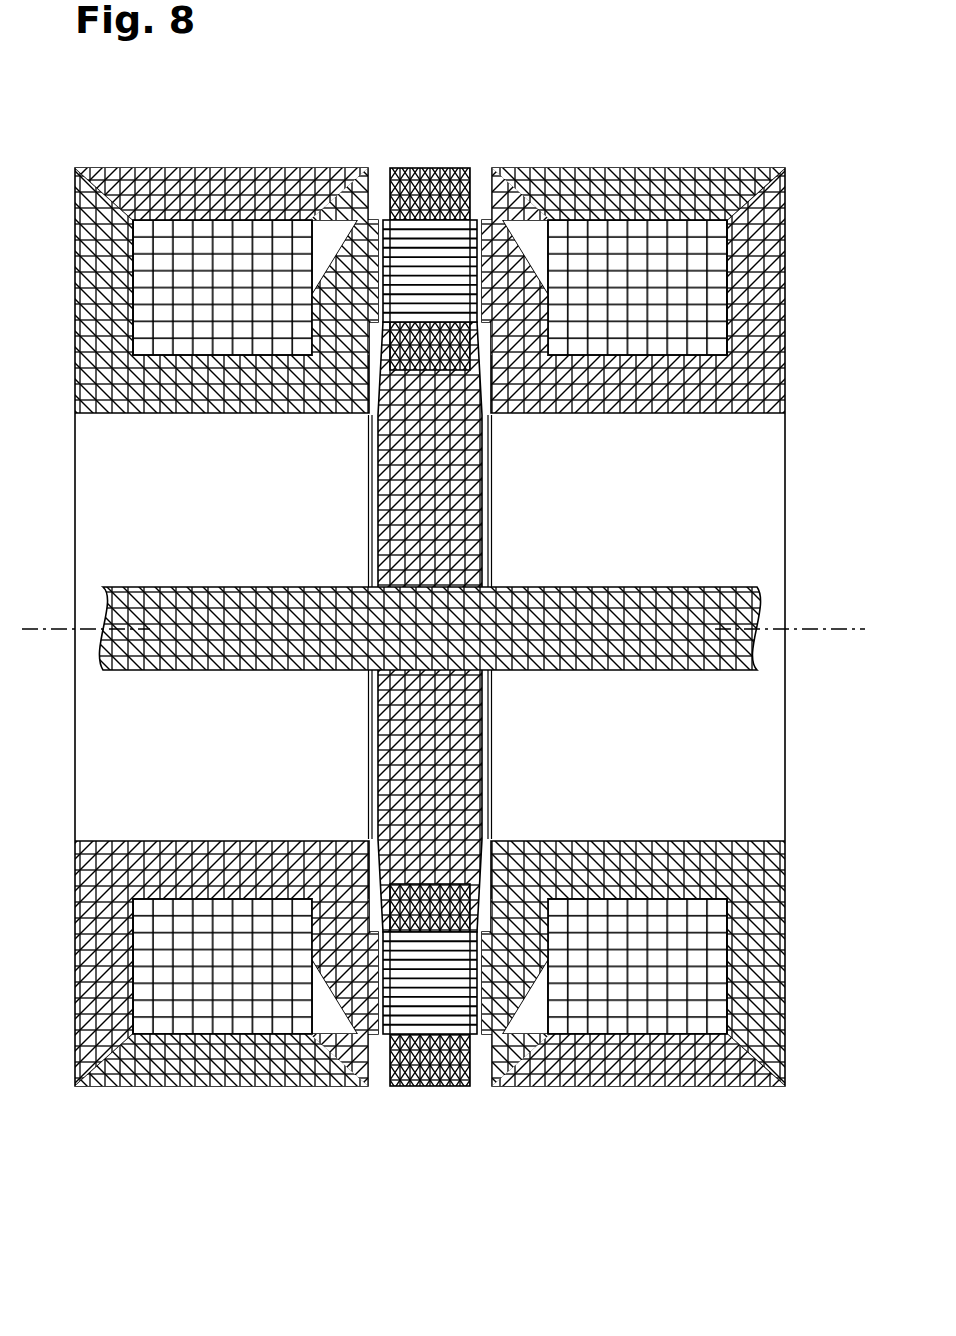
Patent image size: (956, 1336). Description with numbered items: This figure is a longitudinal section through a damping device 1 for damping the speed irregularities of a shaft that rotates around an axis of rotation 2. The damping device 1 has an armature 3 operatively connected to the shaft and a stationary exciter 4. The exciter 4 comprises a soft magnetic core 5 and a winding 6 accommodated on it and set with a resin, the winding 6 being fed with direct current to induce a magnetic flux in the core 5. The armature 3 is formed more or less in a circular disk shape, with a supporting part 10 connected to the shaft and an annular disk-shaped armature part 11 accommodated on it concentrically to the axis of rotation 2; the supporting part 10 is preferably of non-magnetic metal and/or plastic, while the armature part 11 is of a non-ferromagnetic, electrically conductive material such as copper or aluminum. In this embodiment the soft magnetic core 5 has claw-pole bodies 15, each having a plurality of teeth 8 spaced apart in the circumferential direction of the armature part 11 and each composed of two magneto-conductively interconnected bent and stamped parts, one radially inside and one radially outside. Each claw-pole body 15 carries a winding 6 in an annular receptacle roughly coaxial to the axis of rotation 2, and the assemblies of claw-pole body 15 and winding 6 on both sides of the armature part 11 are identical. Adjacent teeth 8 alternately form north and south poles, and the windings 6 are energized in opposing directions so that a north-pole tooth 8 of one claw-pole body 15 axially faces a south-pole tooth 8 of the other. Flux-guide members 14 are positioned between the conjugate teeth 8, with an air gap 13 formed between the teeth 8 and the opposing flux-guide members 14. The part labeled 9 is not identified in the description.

The damping device 1 is at (716, 1222).
The axis of rotation 2 is at (830, 632).
The armature 3 is at (360, 484).
The stationary exciter 4 is at (205, 1104).
The soft magnetic core 5 is at (90, 226).
The winding 6 is at (170, 277).
The teeth 8 is at (357, 245).
The coil carrier 9 is at (93, 299).
The supporting part 10 is at (462, 499).
The armature part 11 is at (428, 272).
The air gap 13 is at (382, 224).
The flux-guide members 14 is at (433, 205).
The claw-pole bodies 15 is at (84, 137).